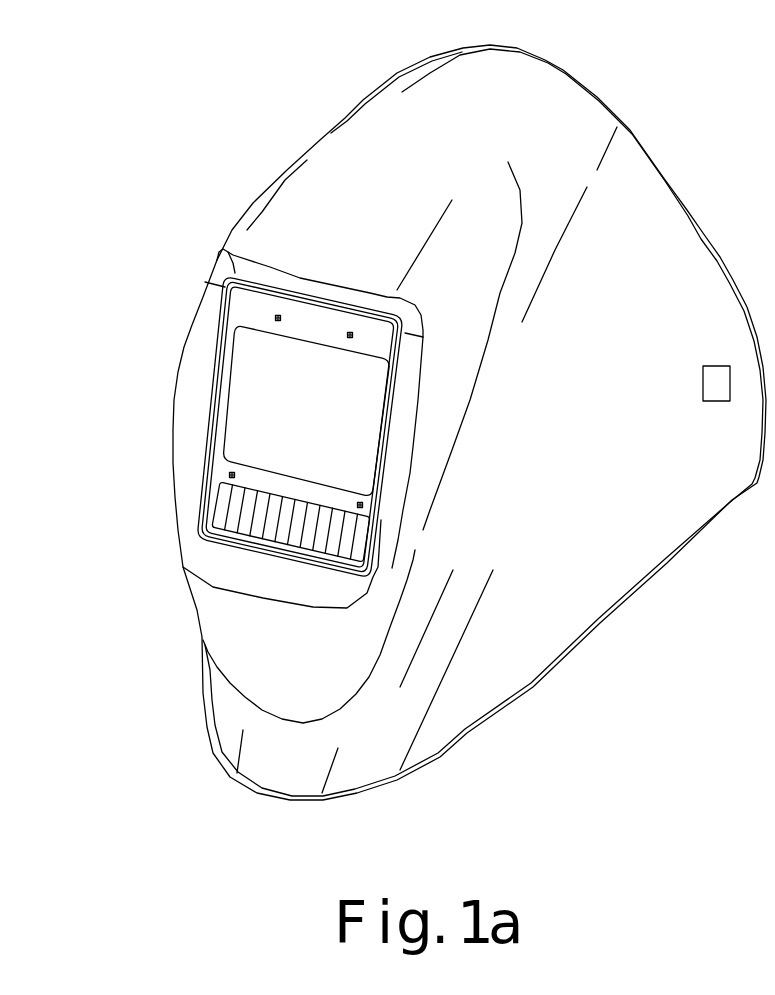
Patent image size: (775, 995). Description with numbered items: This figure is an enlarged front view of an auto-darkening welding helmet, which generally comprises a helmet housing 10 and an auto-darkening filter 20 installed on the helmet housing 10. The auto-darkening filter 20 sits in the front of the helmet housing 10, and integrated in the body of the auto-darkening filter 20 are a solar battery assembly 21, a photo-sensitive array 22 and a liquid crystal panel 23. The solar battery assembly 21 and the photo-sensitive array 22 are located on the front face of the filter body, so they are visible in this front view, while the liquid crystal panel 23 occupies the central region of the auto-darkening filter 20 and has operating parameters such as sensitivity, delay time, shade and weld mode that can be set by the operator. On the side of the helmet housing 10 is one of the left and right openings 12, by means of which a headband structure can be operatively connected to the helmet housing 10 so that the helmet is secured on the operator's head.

The helmet housing 10 is at (547, 178).
The left and right openings 12 is at (718, 368).
The auto-darkening filter 20 is at (238, 310).
The solar battery assembly 21 is at (222, 515).
The photo-sensitive array 22 is at (280, 321).
The liquid crystal panel 23 is at (306, 410).